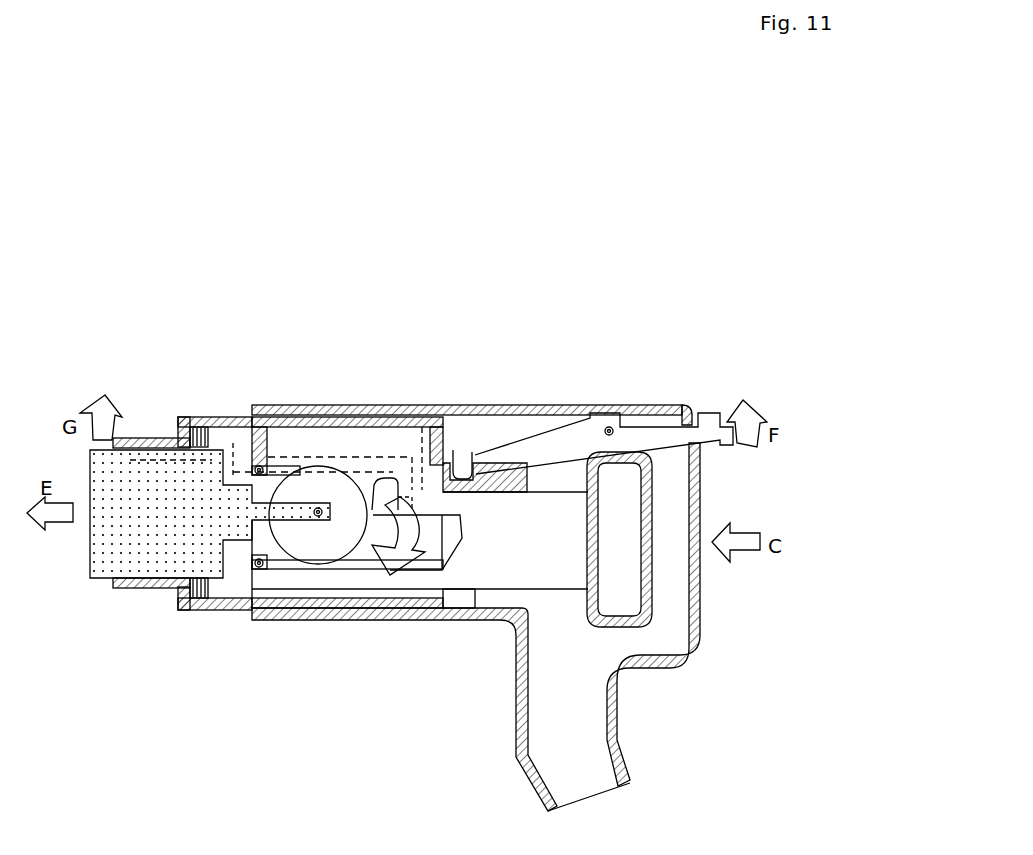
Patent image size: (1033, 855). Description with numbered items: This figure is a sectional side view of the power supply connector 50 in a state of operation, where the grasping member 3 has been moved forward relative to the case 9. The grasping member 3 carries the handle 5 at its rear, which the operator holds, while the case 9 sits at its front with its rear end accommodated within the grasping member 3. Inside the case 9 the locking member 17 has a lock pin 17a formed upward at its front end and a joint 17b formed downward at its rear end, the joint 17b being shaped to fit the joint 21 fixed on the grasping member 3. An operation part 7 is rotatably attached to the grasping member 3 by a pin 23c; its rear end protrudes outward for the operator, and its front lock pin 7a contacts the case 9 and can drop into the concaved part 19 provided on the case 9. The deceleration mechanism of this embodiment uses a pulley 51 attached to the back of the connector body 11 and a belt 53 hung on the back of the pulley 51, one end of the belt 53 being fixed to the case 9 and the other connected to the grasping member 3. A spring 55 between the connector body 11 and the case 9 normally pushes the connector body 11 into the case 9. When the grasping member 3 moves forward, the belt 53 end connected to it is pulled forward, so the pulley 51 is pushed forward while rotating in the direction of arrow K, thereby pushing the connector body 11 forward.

The power supply connector 50 is at (531, 188).
The grasping member 3 is at (280, 620).
The handle 5 is at (640, 542).
The operation part 7 is at (708, 415).
The lock pin 7a is at (462, 450).
The case 9 is at (198, 416).
The connector body 11 is at (113, 572).
The locking member 17 is at (185, 416).
The lock pin 17a is at (132, 440).
The joint 17b is at (400, 478).
The concaved part 19 is at (433, 403).
The joint 21 is at (370, 470).
The pin 23c is at (606, 428).
The pulley 51 is at (320, 540).
The belt 53 is at (322, 572).
The spring 55 is at (197, 612).
The direction of pulley movement K is at (400, 570).